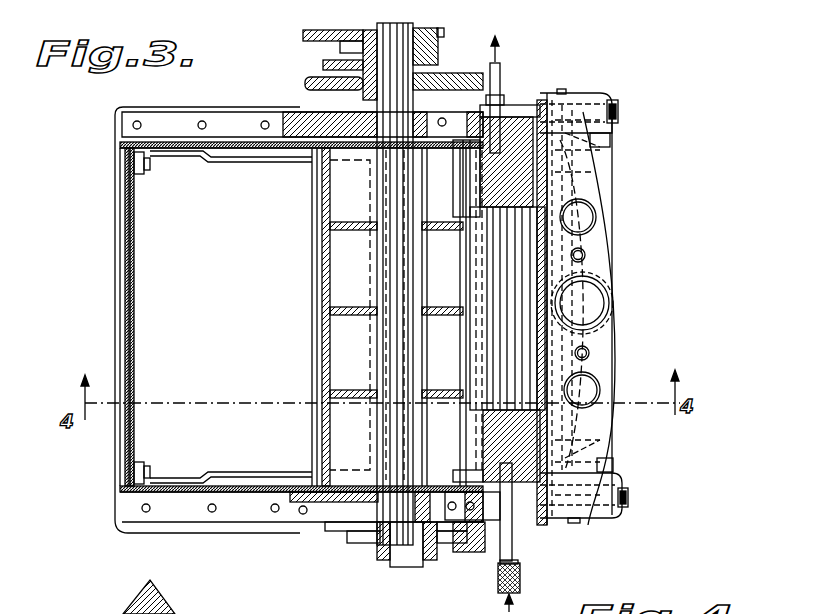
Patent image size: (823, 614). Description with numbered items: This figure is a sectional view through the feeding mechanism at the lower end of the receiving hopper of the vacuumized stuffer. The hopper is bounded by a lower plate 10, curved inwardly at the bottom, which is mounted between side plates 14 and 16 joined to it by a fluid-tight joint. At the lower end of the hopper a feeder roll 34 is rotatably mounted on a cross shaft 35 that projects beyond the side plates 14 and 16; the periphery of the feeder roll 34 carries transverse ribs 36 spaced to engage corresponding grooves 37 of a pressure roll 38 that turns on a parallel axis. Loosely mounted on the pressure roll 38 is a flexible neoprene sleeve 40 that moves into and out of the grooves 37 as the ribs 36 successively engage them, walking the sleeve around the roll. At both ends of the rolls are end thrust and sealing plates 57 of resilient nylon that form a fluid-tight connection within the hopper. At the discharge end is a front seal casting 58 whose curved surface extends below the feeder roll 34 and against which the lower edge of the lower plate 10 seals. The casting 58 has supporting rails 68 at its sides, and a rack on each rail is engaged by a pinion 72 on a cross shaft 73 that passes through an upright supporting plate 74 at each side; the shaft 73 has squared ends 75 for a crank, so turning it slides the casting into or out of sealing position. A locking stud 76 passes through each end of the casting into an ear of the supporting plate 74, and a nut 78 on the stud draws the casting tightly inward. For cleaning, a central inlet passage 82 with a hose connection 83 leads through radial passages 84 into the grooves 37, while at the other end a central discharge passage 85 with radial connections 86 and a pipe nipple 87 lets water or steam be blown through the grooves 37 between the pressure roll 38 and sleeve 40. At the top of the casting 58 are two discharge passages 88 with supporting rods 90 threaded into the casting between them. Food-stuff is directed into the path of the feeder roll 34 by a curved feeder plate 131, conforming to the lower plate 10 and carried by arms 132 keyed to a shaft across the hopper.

The lower plate 10 is at (130, 448).
The side plate 14 is at (237, 494).
The side plate 16 is at (238, 142).
The feeder roll 34 is at (352, 350).
The cross shaft 35 is at (386, 415).
The ribs 36 is at (313, 182).
The grooves 37 is at (478, 207).
The pressure roll 38 is at (545, 188).
The sleeve 40 is at (478, 402).
The end thrust and sealing plates 57 is at (300, 158).
The front seal casting 58 is at (612, 338).
The supporting rails 68 is at (606, 142).
The pinion 72 is at (600, 150).
The cross shaft 73 is at (608, 312).
The upright supporting plate 74 is at (318, 114).
The squared ends 75 is at (561, 89).
The locking stud 76 is at (617, 110).
The nut 78 is at (598, 100).
The central inlet passage 82 is at (505, 500).
The hose connection 83 is at (498, 578).
The radial passages 84 is at (482, 520).
The central discharge passage 85 is at (498, 110).
The radial connections 86 is at (483, 157).
The pipe nipple 87 is at (500, 62).
The discharge passages 88 is at (593, 214).
The supporting rods 90 is at (585, 255).
The curved feeder plate 131 is at (140, 325).
The arms 132 is at (165, 160).